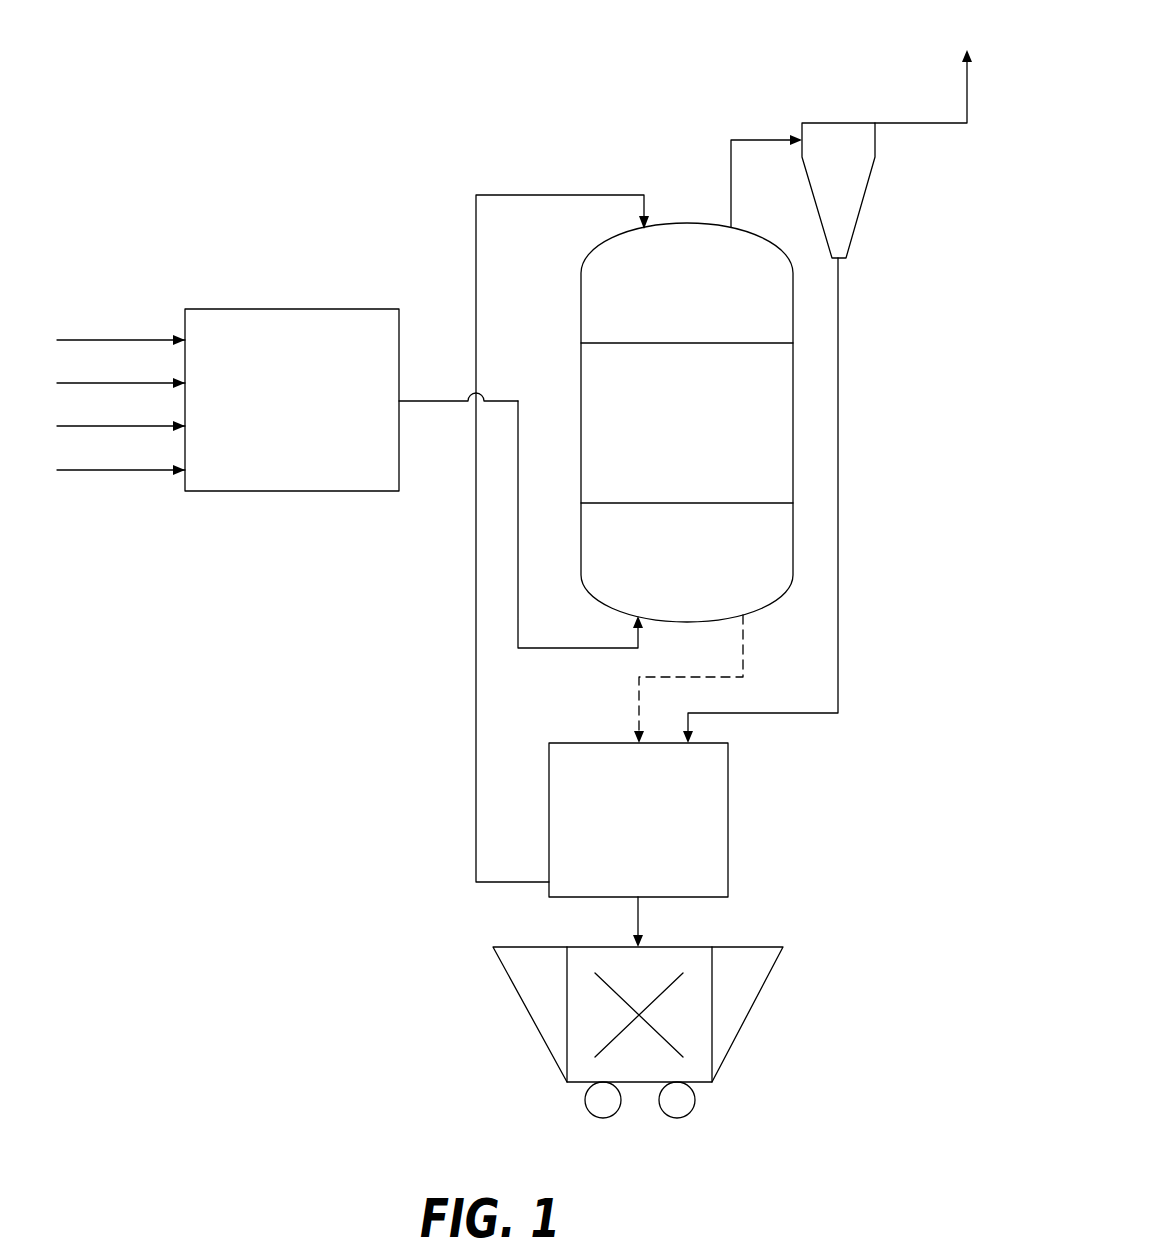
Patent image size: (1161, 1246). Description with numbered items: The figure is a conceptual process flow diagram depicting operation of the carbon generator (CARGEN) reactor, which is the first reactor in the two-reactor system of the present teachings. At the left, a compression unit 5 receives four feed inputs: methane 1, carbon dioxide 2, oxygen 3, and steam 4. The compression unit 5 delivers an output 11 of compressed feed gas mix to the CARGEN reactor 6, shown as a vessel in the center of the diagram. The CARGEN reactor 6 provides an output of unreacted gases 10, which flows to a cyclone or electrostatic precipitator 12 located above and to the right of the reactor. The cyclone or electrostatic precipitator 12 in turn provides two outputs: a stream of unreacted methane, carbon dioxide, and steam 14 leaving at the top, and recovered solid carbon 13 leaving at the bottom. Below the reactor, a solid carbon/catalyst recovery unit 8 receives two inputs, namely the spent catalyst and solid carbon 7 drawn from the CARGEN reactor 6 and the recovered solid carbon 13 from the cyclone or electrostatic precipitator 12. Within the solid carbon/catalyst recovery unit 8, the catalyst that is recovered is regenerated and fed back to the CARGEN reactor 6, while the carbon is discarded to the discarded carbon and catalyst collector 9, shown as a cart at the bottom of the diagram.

The methane 1 is at (75, 340).
The carbon dioxide 2 is at (143, 383).
The oxygen 3 is at (71, 428).
The steam 4 is at (133, 474).
The compression unit 5 is at (276, 309).
The CARGEN reactor 6 is at (793, 400).
The spent catalyst and solid carbon 7 is at (638, 700).
The solid carbon/catalyst recovery unit 8 is at (728, 810).
The discarded carbon and catalyst collector 9 is at (756, 947).
The unreacted gases 10 is at (748, 140).
The output of compressed feed gas mix 11 is at (518, 550).
The cyclone or electrostatic precipitator 12 is at (870, 180).
The recovered solid carbon 13 is at (838, 665).
The unreacted methane, carbon dioxide, and steam 14 is at (917, 123).